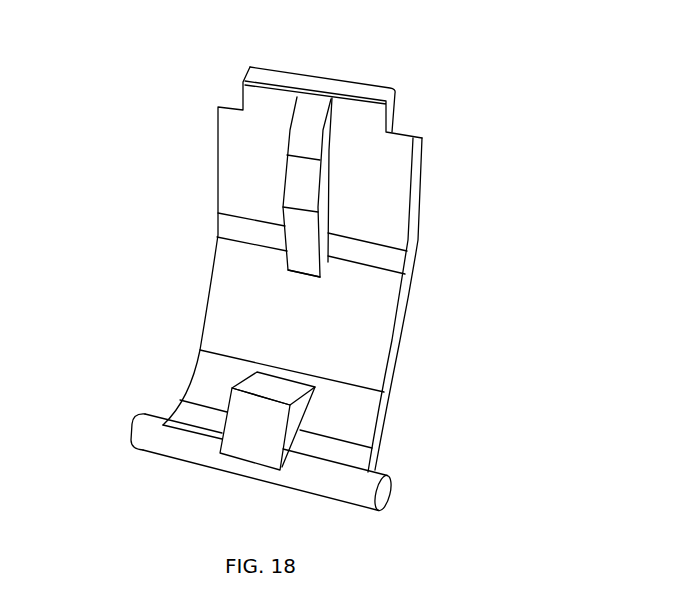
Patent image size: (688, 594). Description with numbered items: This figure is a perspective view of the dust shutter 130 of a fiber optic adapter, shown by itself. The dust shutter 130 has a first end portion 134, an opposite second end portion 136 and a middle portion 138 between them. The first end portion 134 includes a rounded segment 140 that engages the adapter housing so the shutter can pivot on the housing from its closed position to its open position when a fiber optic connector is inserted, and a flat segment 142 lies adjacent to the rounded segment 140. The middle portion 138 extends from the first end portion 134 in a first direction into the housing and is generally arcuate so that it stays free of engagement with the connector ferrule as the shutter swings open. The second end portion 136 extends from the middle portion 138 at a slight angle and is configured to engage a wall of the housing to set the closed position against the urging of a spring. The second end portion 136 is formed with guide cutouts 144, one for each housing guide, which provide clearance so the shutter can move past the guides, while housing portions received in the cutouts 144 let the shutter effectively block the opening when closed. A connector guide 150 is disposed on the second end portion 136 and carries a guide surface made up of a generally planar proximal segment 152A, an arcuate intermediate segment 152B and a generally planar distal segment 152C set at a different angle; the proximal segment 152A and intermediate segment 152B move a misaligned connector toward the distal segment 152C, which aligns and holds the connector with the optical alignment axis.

The dust shutter 130 is at (327, 270).
The first end portion 134 is at (422, 463).
The second end portion 136 is at (447, 174).
The middle portion 138 is at (182, 290).
The rounded segment 140 is at (150, 437).
The flat segment 142 is at (245, 442).
The guide cutouts 144 is at (234, 91).
The connector guide 150 is at (312, 166).
The proximal segment 152A is at (305, 242).
The intermediate segment 152B is at (310, 193).
The distal segment 152C is at (308, 118).